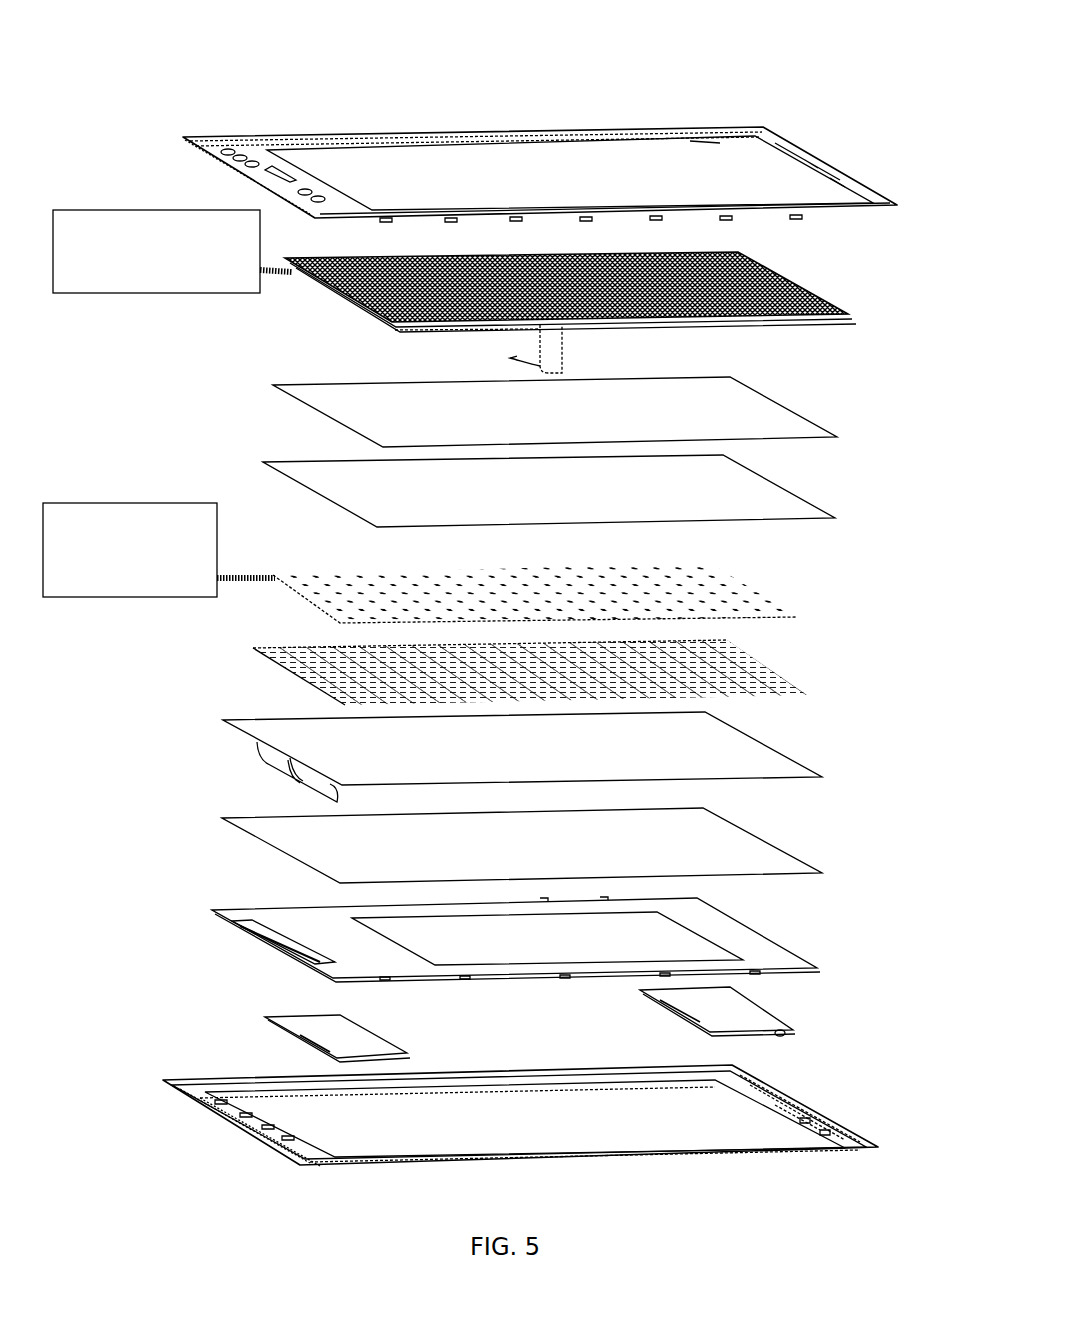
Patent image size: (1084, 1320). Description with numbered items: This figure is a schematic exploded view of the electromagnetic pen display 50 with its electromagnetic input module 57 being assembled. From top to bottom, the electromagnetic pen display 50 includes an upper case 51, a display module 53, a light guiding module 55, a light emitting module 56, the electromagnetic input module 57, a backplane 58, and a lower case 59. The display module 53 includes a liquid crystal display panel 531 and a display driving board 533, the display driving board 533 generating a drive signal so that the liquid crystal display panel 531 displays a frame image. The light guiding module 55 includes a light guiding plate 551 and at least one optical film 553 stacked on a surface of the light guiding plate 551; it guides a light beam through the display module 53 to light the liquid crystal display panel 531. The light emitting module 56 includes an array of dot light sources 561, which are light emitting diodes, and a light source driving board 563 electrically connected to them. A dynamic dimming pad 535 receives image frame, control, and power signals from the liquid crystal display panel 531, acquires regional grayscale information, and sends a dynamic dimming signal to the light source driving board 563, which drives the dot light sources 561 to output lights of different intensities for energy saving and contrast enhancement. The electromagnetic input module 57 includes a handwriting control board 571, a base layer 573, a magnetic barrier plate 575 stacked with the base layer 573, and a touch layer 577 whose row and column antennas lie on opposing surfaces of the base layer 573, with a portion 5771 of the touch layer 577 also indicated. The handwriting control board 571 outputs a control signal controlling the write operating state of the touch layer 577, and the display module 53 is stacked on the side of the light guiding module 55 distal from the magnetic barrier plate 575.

The electromagnetic pen display 50 is at (552, 31).
The upper case 51 is at (693, 130).
The display module 53 is at (481, 636).
The liquid crystal display panel 531 is at (788, 285).
The display driving board 533 is at (185, 293).
The dynamic dimming pad 535 is at (307, 1027).
The light guiding module 55 is at (612, 452).
The light guiding plate 551 is at (782, 505).
The optical film 553 is at (807, 432).
The light emitting module 56 is at (472, 587).
The dot light source 561 is at (798, 615).
The light source driving board 563 is at (142, 597).
The electromagnetic input module 57 is at (562, 838).
The handwriting control board 571 is at (770, 958).
The base layer 573 is at (768, 768).
The magnetic barrier plate 575 is at (777, 863).
The touch layer 577 is at (527, 676).
The diffuser plate edge 5771 is at (273, 672).
The backplane 58 is at (278, 923).
The lower case 59 is at (787, 1090).